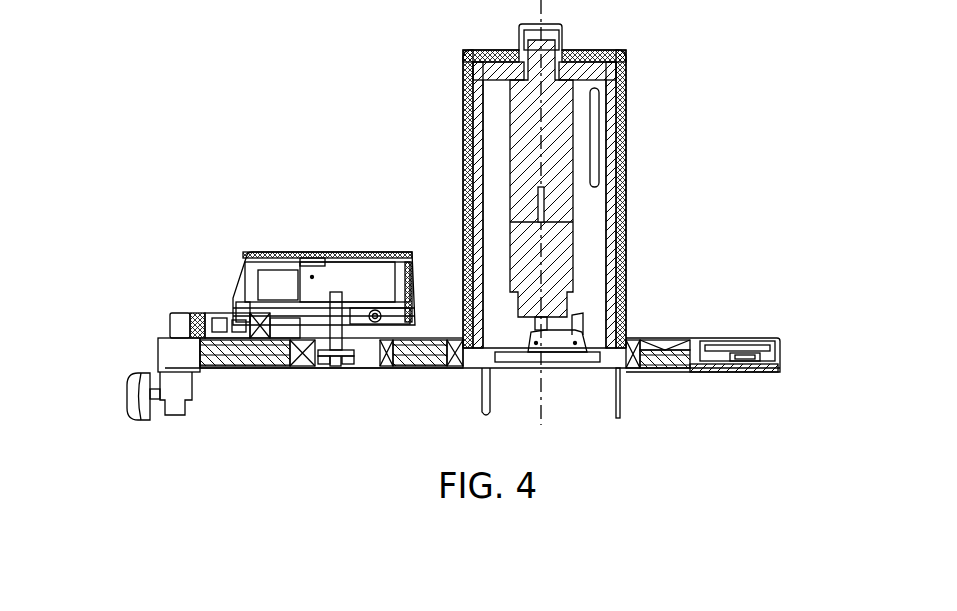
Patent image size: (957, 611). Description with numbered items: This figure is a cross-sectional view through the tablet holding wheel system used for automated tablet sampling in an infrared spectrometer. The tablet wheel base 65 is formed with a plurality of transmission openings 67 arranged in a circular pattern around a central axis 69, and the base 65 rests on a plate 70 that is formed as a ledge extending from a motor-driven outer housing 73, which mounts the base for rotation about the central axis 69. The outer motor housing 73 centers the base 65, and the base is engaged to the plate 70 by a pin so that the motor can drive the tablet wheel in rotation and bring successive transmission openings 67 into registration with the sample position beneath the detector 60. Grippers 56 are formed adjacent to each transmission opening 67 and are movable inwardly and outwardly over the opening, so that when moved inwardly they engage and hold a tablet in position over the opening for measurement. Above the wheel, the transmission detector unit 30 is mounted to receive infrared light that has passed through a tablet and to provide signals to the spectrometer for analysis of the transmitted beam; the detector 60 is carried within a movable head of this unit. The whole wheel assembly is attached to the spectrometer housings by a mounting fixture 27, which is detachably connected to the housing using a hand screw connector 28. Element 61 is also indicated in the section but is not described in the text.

The mounting fixture 27 is at (162, 318).
The hand screw connector 28 is at (135, 372).
The transmission detector unit 30 is at (308, 248).
The grippers 56 is at (323, 370).
The detector 60 is at (334, 370).
The valve retainer 61 is at (345, 370).
The tablet wheel base 65 is at (670, 338).
The transmission openings 67 is at (752, 375).
The central axis 69 is at (545, 410).
The plate 70 is at (458, 355).
The motor-driven outer housing 73 is at (625, 143).